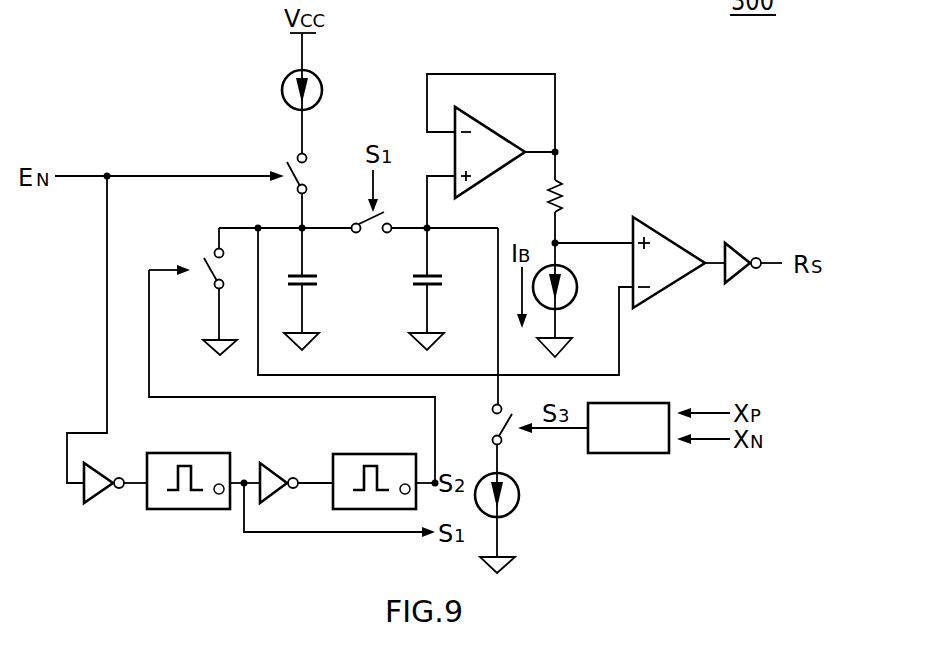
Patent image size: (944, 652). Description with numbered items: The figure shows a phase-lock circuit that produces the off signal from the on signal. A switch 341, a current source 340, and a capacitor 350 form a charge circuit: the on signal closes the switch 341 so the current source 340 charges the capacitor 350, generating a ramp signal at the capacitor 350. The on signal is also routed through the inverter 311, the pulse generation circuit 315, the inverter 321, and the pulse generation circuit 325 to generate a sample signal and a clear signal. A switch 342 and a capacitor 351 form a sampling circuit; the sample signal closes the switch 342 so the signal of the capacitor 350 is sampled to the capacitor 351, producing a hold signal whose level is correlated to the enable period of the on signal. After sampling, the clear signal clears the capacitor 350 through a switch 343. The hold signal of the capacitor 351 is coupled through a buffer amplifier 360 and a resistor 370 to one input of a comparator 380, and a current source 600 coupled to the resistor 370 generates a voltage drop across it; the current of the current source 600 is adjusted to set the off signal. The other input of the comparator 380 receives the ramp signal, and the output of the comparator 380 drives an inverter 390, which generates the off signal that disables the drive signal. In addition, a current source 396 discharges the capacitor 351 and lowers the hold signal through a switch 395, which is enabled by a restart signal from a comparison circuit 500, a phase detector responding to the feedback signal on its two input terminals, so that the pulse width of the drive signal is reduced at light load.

The inverter 311 is at (99, 494).
The pulse generation circuit 315 is at (158, 452).
The inverter 321 is at (266, 464).
The pulse generation circuit 325 is at (345, 453).
The current source 340 is at (323, 91).
The switch 341 is at (312, 176).
The switch 342 is at (370, 233).
The switch 343 is at (203, 278).
The capacitor 350 is at (320, 280).
The capacitor 351 is at (445, 280).
The buffer amplifier 360 is at (478, 120).
The resistor 370 is at (568, 196).
The comparator 380 is at (652, 224).
The inverter 390 is at (743, 272).
The switch 395 is at (493, 416).
The current source 396 is at (518, 486).
The comparison circuit 500 is at (632, 402).
The current source 600 is at (580, 285).